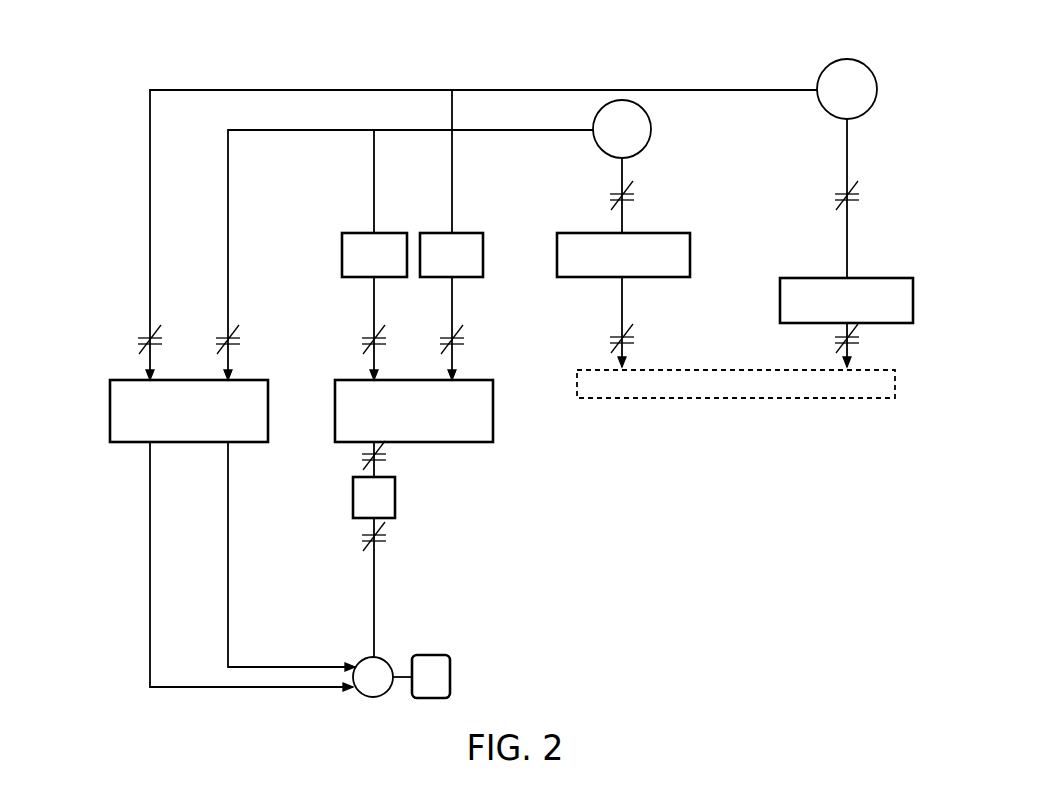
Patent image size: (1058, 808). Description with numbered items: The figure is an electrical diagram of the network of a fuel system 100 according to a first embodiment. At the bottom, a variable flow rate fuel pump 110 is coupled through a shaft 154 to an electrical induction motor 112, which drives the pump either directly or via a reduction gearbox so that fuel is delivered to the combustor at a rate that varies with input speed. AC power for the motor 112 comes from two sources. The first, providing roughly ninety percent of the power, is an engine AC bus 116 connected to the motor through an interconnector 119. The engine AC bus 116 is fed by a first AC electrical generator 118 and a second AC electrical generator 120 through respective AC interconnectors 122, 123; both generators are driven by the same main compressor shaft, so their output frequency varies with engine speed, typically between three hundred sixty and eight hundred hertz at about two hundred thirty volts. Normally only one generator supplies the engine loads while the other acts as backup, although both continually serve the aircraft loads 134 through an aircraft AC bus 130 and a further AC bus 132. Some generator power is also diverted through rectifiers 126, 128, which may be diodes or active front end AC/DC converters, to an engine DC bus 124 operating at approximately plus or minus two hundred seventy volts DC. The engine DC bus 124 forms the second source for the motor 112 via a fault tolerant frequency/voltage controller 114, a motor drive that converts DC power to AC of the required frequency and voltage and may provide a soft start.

The fuel system 100 is at (576, 482).
The variable flow rate fuel pump 110 is at (450, 666).
The motor 112 is at (362, 660).
The frequency/voltage controller 114 is at (396, 493).
The engine AC bus 116 is at (255, 378).
The first AC electrical generator 118 is at (655, 126).
The interconnector 119 is at (150, 588).
The second AC electrical generator 120 is at (820, 68).
The AC interconnector 122 is at (322, 88).
The AC interconnector 123 is at (262, 133).
The engine DC bus 124 is at (483, 378).
The rectifier 126 is at (348, 232).
The rectifier 128 is at (476, 232).
The aircraft AC bus 130 is at (692, 253).
The AC bus 132 is at (890, 276).
The aircraft loads 134 is at (742, 400).
The shaft 154 is at (401, 675).